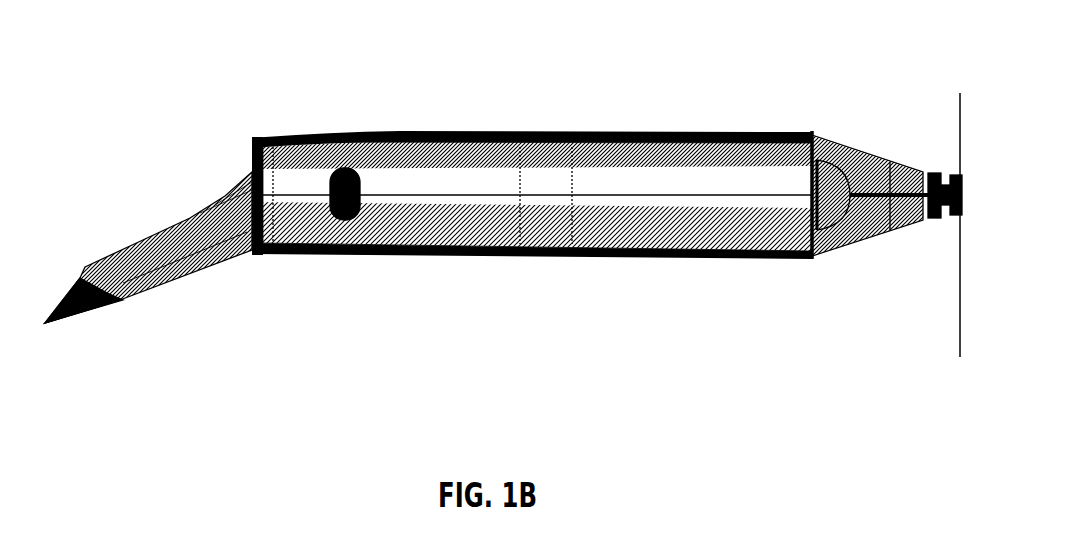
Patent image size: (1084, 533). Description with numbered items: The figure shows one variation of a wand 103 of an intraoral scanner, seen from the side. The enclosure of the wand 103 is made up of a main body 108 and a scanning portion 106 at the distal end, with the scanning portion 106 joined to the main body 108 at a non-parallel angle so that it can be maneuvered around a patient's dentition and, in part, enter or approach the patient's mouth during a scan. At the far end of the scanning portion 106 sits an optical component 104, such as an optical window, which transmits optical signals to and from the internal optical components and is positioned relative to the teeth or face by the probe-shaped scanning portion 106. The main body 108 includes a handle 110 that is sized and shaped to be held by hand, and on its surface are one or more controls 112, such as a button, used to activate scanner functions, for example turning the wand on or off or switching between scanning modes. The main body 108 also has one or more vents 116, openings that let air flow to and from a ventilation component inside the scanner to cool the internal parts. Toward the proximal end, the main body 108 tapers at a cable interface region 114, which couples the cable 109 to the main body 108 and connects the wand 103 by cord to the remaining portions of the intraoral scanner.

The wand 103 is at (503, 202).
The optical component 104 is at (80, 325).
The scanning portion 106 is at (143, 212).
The main body 108 is at (403, 155).
The cable 109 is at (938, 150).
The handle 110 is at (624, 113).
The controls 112 is at (348, 232).
The cable interface region 114 is at (875, 258).
The vents 116 is at (798, 125).